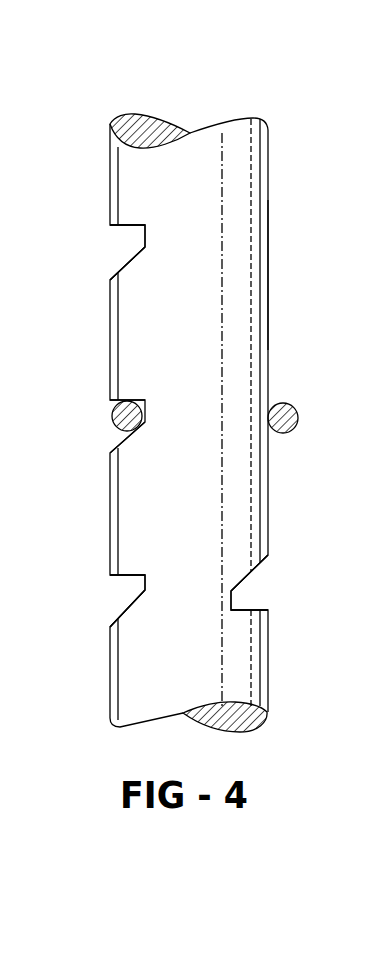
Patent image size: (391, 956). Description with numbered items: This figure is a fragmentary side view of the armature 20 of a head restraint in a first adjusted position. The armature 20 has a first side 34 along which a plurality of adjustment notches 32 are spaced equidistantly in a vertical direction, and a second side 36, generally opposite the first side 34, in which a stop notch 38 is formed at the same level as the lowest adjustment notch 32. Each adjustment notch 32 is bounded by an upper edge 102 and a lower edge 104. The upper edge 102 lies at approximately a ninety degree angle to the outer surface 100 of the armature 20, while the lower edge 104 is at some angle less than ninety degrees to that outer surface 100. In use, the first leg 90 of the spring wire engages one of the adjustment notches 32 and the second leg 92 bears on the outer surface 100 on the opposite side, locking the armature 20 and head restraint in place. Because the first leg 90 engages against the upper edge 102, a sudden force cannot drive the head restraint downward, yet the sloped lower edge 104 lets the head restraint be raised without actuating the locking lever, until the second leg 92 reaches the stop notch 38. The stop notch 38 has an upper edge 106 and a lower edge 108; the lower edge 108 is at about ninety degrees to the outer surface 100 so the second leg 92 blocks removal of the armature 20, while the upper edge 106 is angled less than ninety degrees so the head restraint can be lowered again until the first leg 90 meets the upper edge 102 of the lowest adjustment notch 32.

The armature 20 is at (252, 157).
The adjustment notches 32 is at (138, 240).
The first side 34 is at (110, 150).
The second side 36 is at (270, 272).
The stop notch 38 is at (233, 598).
The first leg 90 is at (112, 425).
The second leg 92 is at (298, 413).
The outer surface 100 is at (202, 348).
The upper edge 102 is at (120, 233).
The lower edge 104 is at (117, 268).
The upper edge 106 is at (260, 570).
The lower edge 108 is at (253, 608).